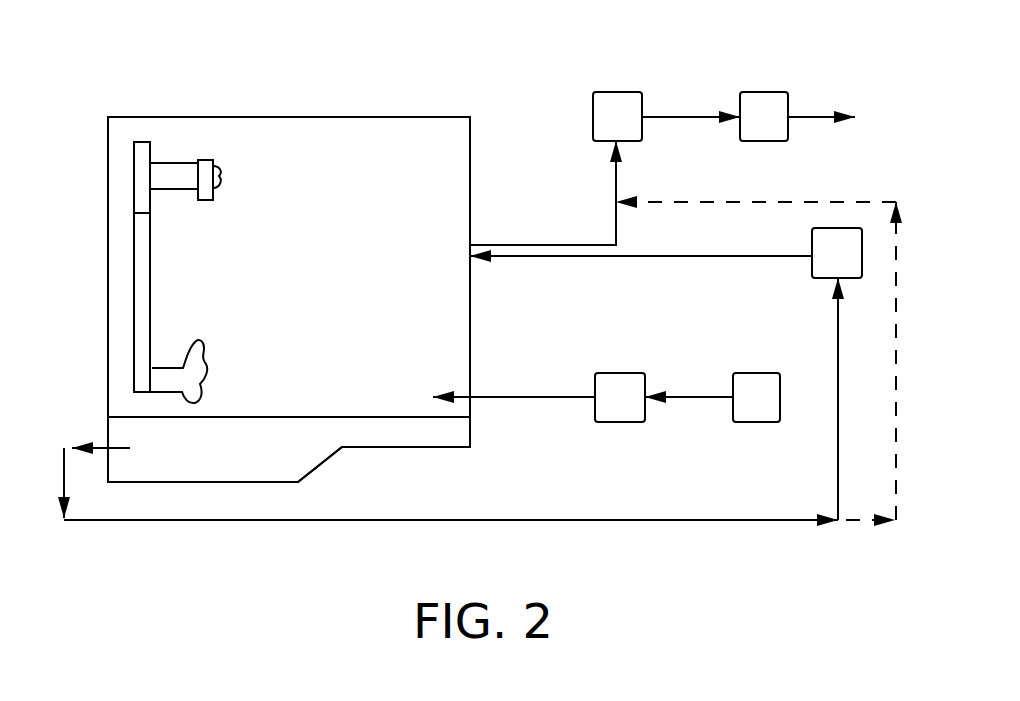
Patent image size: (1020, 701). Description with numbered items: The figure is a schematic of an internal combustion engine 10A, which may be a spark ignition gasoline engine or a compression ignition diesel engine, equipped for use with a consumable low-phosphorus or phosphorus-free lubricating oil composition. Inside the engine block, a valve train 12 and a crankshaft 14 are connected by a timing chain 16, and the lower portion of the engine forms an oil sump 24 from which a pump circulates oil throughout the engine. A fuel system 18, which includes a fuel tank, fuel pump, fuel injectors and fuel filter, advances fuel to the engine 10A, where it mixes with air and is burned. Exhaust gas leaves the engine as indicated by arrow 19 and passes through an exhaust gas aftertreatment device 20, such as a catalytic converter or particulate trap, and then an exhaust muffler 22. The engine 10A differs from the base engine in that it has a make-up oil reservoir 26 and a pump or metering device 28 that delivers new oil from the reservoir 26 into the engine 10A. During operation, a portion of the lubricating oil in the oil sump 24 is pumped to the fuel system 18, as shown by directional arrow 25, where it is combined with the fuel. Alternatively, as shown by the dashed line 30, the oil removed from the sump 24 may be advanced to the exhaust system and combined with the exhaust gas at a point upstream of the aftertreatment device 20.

The engine 10A is at (418, 88).
The valve train 12 is at (222, 172).
The crankshaft 14 is at (204, 380).
The timing chain 16 is at (152, 283).
The fuel system 18 is at (812, 242).
The exhaust gas arrow 19 is at (616, 183).
The exhaust gas aftertreatment device 20 is at (620, 92).
The exhaust muffler 22 is at (766, 92).
The oil sump 24 is at (298, 458).
The directional arrow 25 is at (500, 520).
The make-up oil reservoir 26 is at (755, 373).
The pump or metering device 28 is at (620, 373).
The dashed line 30 is at (897, 350).